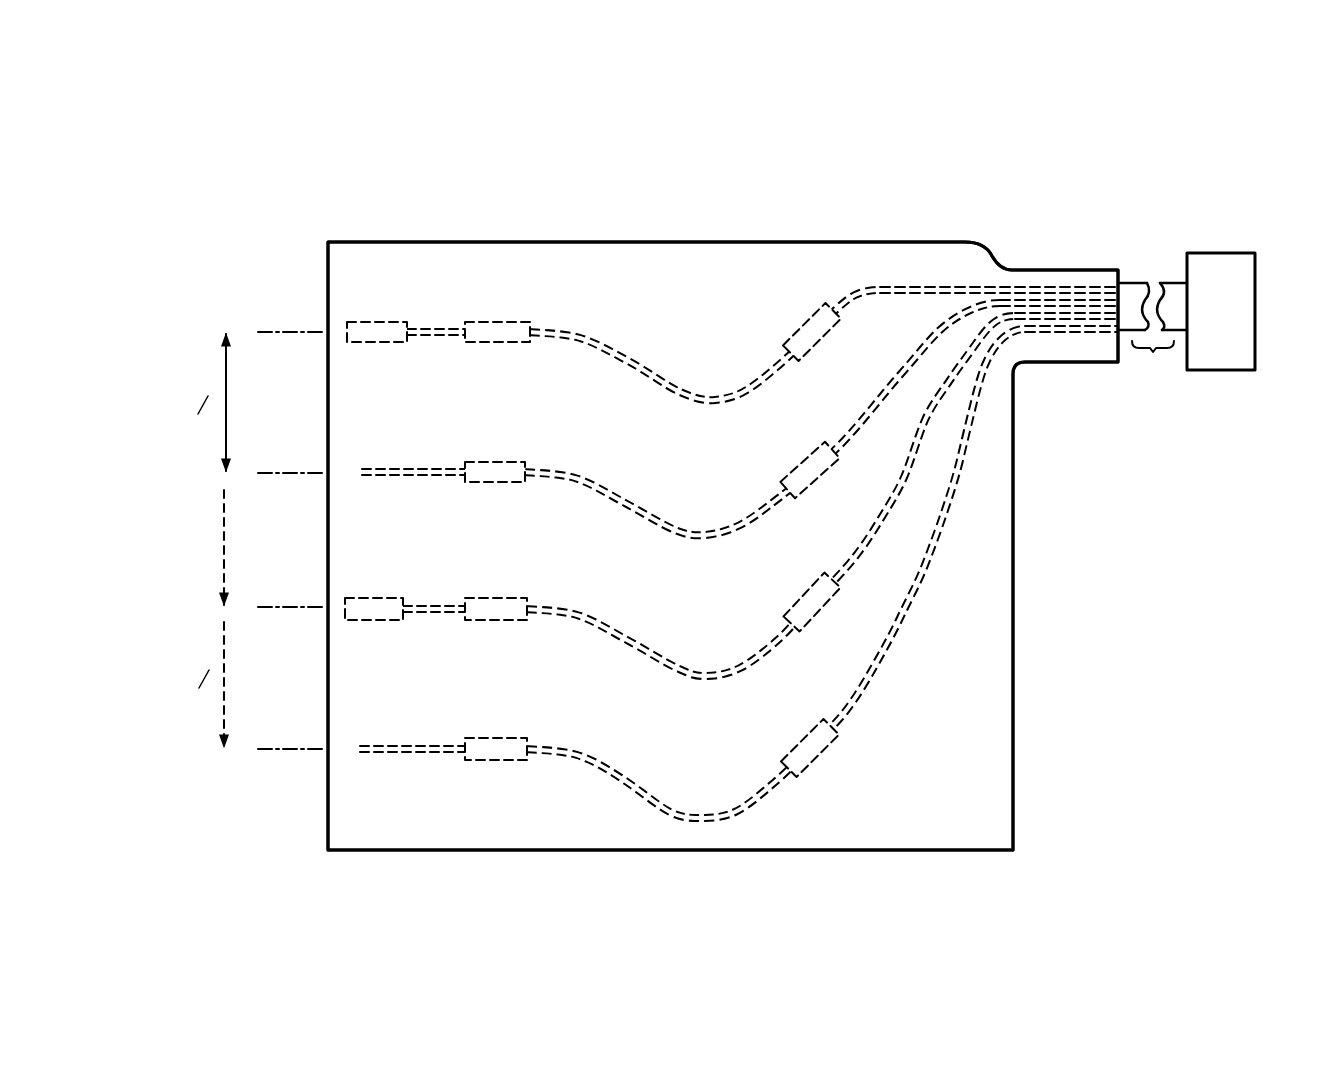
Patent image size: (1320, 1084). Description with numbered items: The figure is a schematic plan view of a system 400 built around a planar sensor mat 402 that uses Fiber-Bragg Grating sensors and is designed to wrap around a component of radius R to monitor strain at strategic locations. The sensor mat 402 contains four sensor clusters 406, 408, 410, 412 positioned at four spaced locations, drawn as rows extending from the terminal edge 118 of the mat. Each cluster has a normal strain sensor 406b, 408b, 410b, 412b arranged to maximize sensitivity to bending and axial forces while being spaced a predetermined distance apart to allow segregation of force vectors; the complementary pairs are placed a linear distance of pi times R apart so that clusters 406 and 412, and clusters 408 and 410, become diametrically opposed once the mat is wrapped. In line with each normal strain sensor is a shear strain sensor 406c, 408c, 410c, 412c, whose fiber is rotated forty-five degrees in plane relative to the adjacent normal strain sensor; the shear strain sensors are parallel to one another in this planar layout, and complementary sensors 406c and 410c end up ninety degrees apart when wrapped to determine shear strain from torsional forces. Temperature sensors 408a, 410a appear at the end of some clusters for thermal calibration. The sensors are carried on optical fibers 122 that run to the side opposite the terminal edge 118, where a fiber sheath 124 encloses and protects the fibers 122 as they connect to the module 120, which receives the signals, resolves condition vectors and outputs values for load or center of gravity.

The system 400 is at (388, 194).
The terminal edge 118 is at (322, 288).
The sensor mat 402 is at (598, 258).
The sensor cluster 408 is at (318, 341).
The temperature sensor 408a is at (377, 336).
The normal strain sensor 408b is at (489, 336).
The shear strain sensor 408c is at (803, 325).
The sensor cluster 412 is at (318, 482).
The normal strain sensor 412b is at (496, 476).
The shear strain sensor 412c is at (803, 464).
The sensor cluster 410 is at (318, 616).
The temperature sensor 410a is at (378, 612).
The normal strain sensor 410b is at (490, 613).
The shear strain sensor 410c is at (803, 598).
The sensor cluster 406 is at (316, 759).
The normal strain sensor 406b is at (492, 752).
The shear strain sensor 406c is at (808, 732).
The optical fibers 122 is at (1072, 292).
The module 120 is at (1240, 327).
The fiber sheath 124 is at (1157, 363).